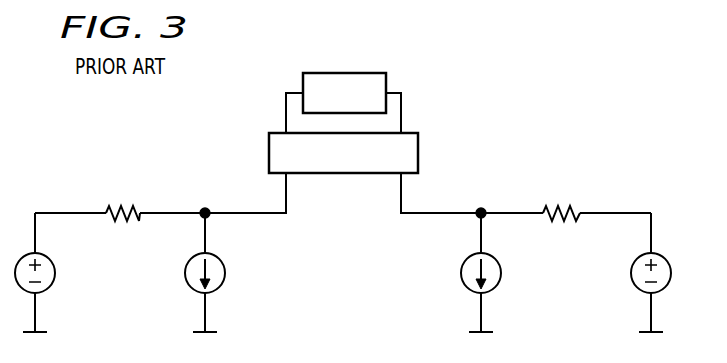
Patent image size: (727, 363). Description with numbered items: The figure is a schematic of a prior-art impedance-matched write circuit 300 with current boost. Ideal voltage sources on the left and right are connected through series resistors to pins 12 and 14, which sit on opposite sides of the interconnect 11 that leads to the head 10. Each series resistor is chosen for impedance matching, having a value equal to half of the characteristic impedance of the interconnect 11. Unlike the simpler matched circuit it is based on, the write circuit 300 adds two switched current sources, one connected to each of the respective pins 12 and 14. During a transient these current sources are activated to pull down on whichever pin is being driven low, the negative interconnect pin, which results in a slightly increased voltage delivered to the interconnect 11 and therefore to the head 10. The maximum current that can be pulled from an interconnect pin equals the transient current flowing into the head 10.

The head 10 is at (386, 77).
The interconnect 11 is at (418, 157).
The pin 12 is at (204, 208).
The pin 14 is at (484, 208).
The impedance-matched write circuit 300 is at (560, 110).